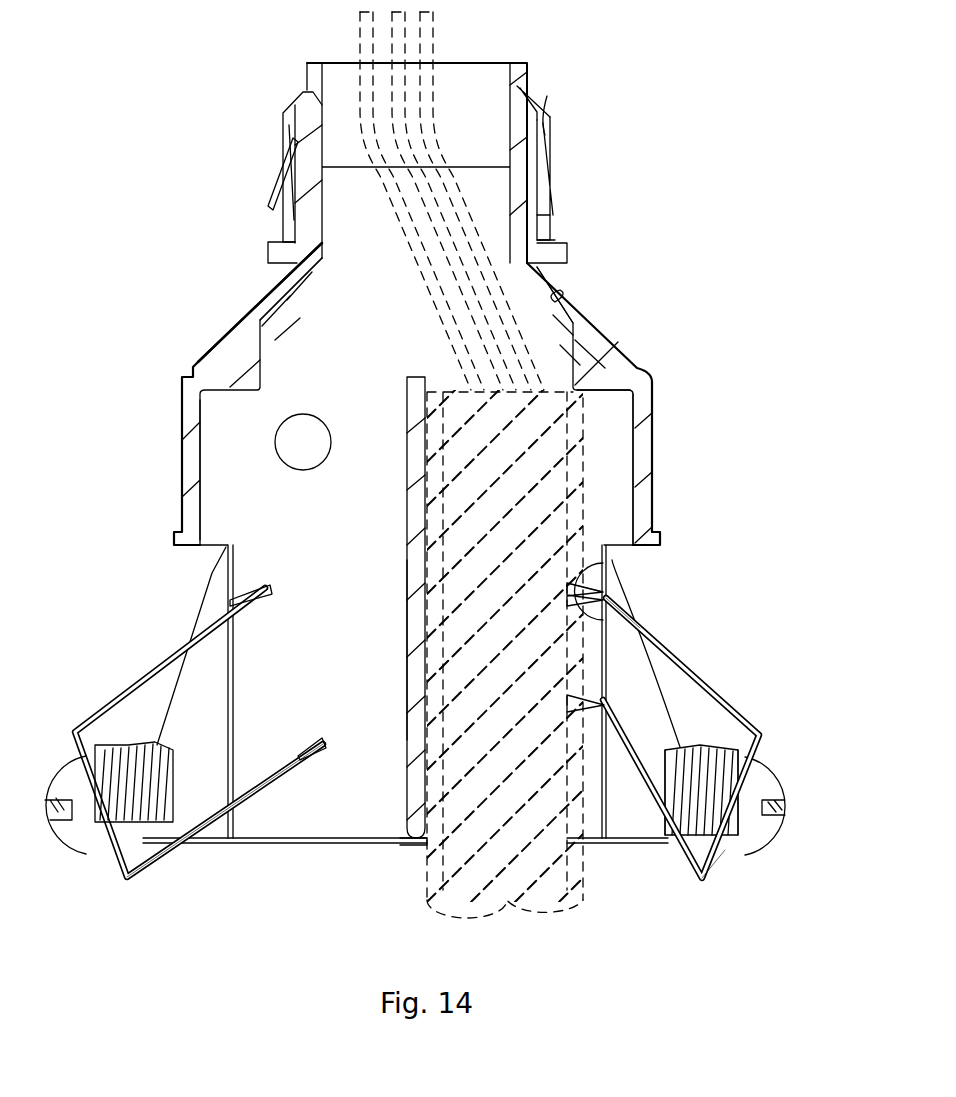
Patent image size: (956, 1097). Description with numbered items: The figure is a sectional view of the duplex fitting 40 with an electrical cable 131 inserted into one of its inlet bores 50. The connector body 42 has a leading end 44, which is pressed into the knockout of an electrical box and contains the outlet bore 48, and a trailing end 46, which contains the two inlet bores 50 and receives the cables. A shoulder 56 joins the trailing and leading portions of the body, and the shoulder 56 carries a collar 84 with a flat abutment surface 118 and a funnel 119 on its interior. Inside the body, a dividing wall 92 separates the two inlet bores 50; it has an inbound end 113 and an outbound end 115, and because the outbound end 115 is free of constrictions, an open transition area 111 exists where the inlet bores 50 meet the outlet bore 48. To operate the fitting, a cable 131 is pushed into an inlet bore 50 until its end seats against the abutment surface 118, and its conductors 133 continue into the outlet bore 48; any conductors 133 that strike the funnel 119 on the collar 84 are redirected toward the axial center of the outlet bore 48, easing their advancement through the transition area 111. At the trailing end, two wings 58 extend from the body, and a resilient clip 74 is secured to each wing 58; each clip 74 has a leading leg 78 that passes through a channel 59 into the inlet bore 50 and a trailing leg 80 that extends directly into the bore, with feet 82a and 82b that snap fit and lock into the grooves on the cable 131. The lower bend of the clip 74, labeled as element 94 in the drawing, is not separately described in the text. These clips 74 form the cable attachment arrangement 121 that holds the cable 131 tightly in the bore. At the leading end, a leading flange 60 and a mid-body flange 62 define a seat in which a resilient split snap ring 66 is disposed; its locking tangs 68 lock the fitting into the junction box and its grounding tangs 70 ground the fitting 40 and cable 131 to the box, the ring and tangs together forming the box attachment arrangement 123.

The duplex fitting 40 is at (118, 112).
The conductors 133 is at (358, 34).
The box attachment arrangement 123 is at (238, 135).
The leading end 44 is at (525, 128).
The leading flange 60 is at (545, 106).
The resilient snap ring 66 is at (545, 145).
The locking tangs 68 is at (273, 195).
The grounding tangs 70 is at (552, 222).
The mid-body flange 62 is at (567, 255).
The outlet bore 48 is at (362, 234).
The shoulder 56 is at (230, 332).
The funnel 119 is at (282, 300).
The outbound end 115 is at (416, 370).
The abutment surface 118 is at (222, 396).
The open transition area 111 is at (335, 385).
The collar 84 is at (615, 396).
The connector body 42 is at (648, 445).
The dividing wall 92 is at (412, 565).
The foot 82a is at (588, 573).
The foot 82b is at (633, 620).
The inlet bores 50 is at (344, 634).
The leading leg 78 is at (142, 670).
The channels 59 is at (635, 717).
The wings 58 is at (710, 752).
The resilient clip 74 is at (755, 722).
The cable attachment arrangement 121 is at (770, 856).
The clip end 94 is at (713, 860).
The electrical cable 131 is at (578, 892).
The inbound end 113 is at (413, 848).
The trailing end 46 is at (318, 845).
The trailing leg 80 is at (197, 830).